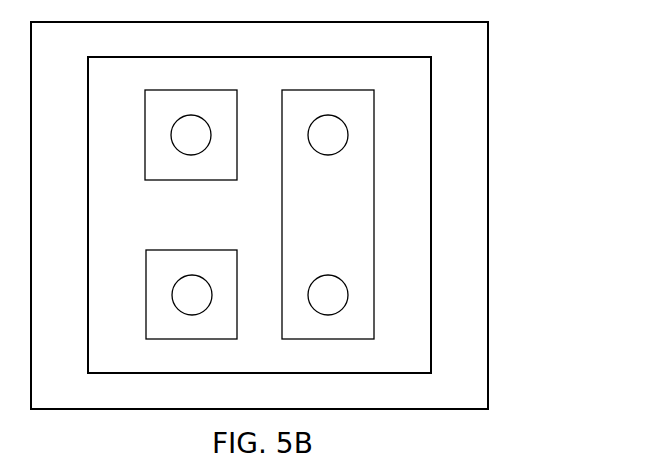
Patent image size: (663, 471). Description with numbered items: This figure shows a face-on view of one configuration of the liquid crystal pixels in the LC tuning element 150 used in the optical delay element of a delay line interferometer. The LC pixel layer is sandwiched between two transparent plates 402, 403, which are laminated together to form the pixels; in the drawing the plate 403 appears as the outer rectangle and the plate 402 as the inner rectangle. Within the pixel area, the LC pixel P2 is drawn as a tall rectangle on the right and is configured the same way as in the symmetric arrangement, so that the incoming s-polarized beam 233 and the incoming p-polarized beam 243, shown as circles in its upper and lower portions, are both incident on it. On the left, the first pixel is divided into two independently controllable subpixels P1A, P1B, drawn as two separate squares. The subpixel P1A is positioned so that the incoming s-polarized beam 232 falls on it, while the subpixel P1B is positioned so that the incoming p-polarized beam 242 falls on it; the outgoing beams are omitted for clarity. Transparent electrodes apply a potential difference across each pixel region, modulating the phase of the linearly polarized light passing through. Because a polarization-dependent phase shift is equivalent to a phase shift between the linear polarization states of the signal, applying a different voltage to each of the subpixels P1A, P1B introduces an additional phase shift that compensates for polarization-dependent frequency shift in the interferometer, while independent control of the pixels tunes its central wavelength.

The LC tuning element 150 is at (316, 215).
The transparent plate 403 is at (259, 215).
The transparent plate 402 is at (175, 373).
The subpixel P1A is at (169, 151).
The subpixel P1B is at (168, 280).
The LC pixel P2 is at (311, 214).
The incoming s-polarized beam 232 is at (200, 155).
The incoming p-polarized beam 242 is at (206, 281).
The incoming s-polarized beam 233 is at (337, 155).
The incoming p-polarized beam 243 is at (343, 281).